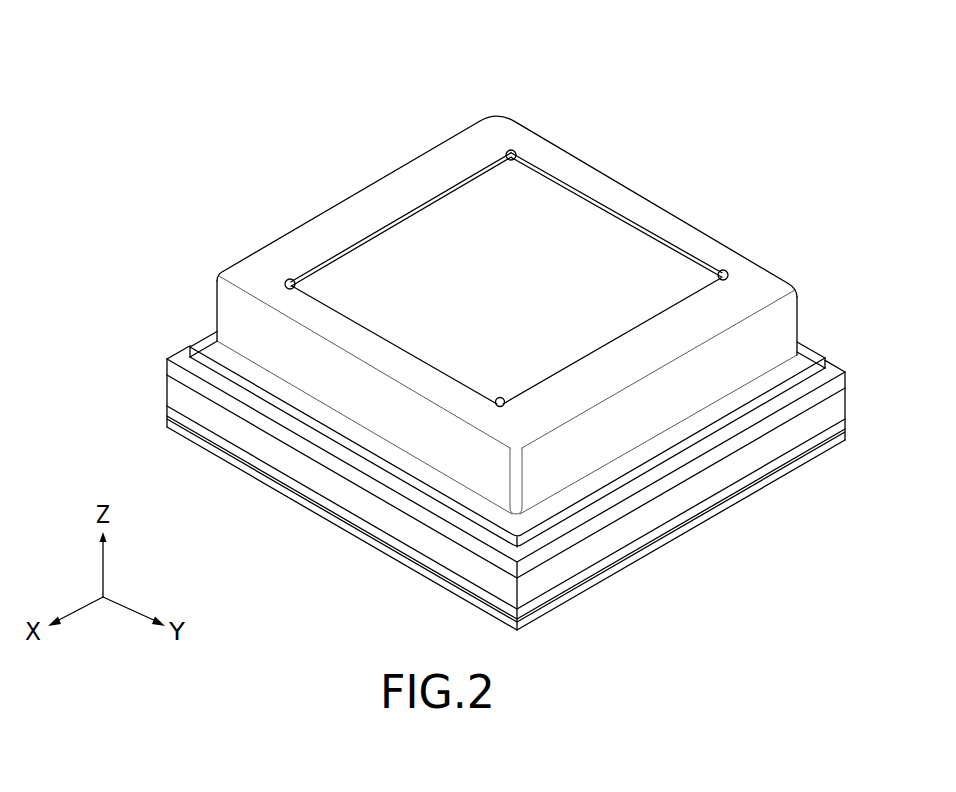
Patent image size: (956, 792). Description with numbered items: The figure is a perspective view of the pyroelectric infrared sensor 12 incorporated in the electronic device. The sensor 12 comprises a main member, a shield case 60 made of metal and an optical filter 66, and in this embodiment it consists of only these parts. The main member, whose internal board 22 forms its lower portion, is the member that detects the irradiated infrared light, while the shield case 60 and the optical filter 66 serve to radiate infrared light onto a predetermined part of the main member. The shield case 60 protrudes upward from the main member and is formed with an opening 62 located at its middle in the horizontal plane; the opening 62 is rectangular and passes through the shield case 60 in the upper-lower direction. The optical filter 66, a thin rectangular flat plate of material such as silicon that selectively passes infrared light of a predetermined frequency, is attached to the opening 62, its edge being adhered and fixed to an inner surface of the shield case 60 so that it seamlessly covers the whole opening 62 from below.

The pyroelectric infrared sensor 12 is at (165, 97).
The shield case 60 is at (205, 270).
The opening 62 is at (348, 277).
The optical filter 66 is at (405, 266).
The internal board 22 is at (160, 360).